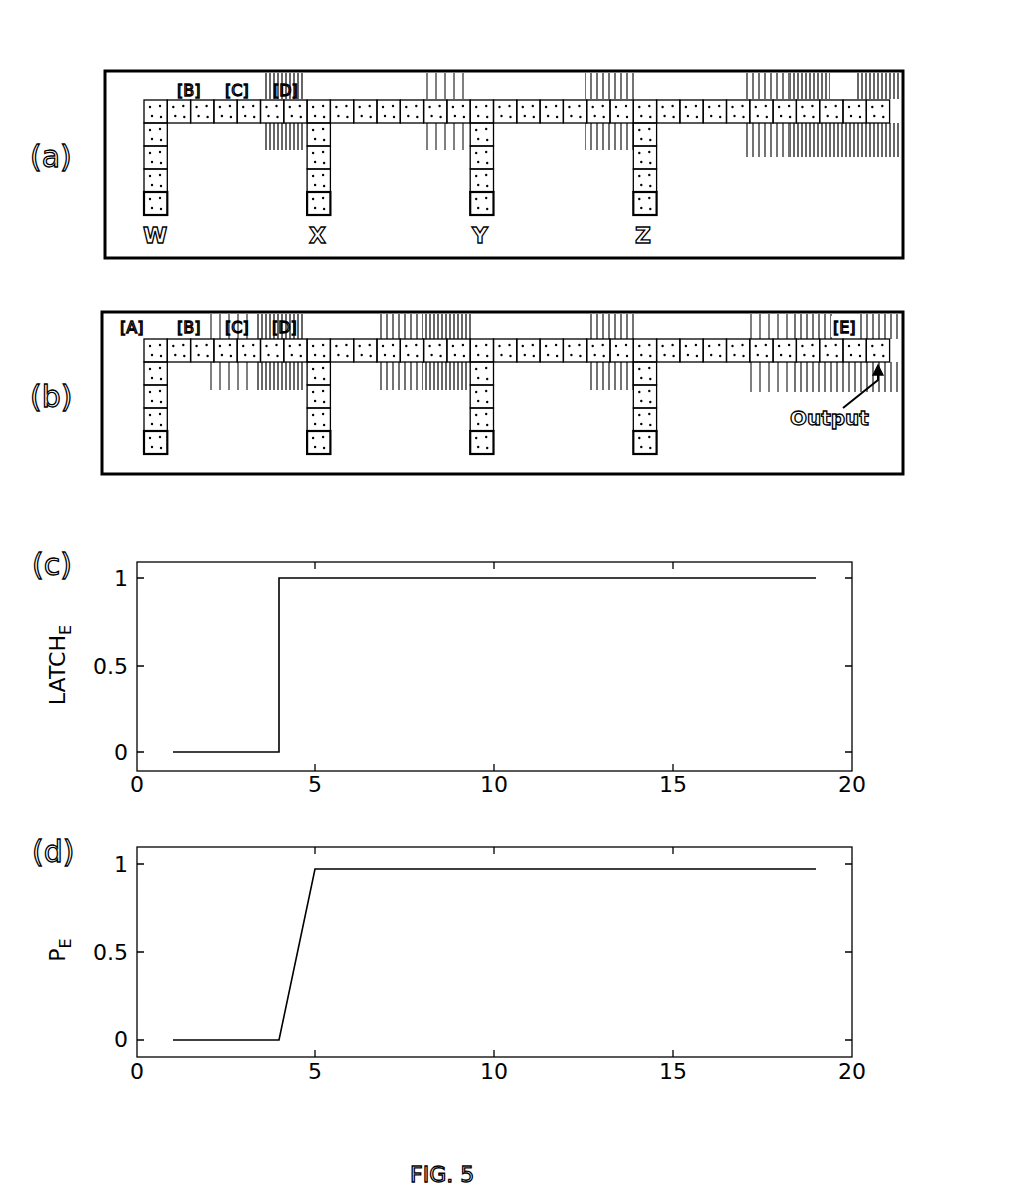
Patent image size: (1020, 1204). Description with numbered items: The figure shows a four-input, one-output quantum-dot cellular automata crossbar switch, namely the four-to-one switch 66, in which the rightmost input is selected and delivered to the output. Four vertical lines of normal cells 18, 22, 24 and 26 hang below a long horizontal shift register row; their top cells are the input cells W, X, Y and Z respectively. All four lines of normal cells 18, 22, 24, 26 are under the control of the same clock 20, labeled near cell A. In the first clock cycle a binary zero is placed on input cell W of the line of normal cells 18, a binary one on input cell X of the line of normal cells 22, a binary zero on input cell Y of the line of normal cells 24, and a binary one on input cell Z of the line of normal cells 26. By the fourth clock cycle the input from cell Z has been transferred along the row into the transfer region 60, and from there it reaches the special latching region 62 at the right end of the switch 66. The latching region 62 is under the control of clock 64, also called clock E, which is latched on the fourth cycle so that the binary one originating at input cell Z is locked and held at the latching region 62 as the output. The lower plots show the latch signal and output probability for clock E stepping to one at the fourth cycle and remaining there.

The line of normal cells 18 is at (145, 173).
The clock 20 is at (140, 82).
The line of normal cells 22 is at (305, 167).
The line of normal cells 24 is at (470, 162).
The line of normal cells 26 is at (633, 160).
The transfer region 60 is at (767, 70).
The latching region 62 is at (858, 142).
The clock 64 is at (837, 72).
The four-to-one switch 66 is at (400, 70).